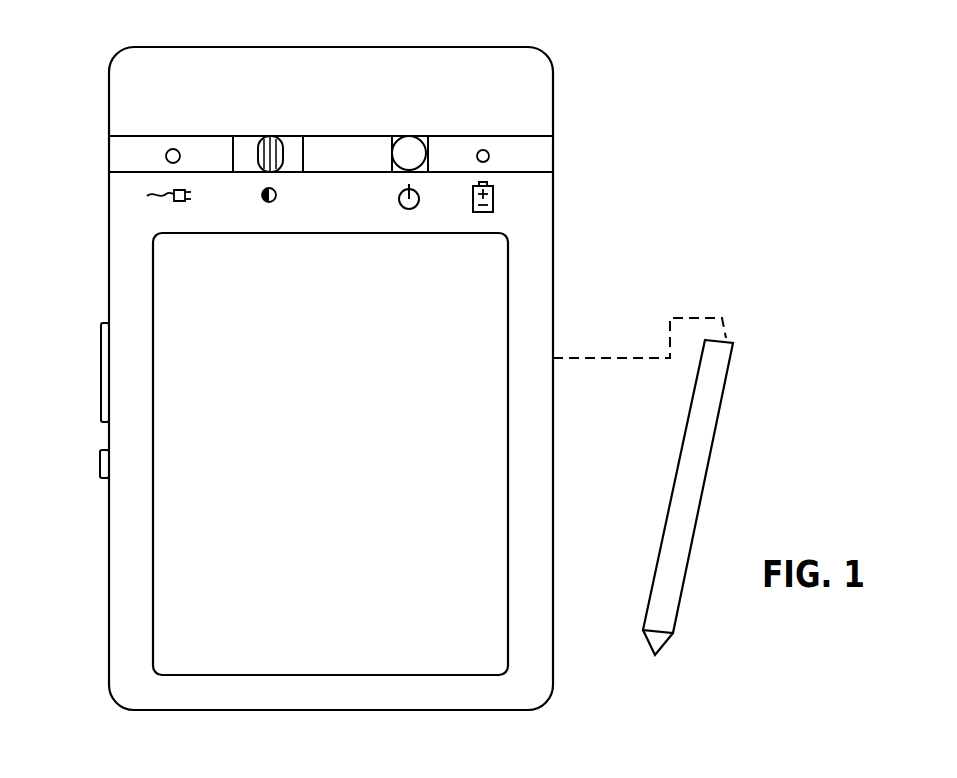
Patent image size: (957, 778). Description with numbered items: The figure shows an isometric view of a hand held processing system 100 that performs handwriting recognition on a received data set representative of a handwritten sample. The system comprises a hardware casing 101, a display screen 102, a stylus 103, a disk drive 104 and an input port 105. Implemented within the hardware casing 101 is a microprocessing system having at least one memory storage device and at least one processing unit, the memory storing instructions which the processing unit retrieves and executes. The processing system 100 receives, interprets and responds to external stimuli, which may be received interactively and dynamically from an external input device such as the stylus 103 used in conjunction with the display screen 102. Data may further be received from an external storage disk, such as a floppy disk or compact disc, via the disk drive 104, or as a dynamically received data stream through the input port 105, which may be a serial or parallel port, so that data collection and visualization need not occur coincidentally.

The hand held processing system 100 is at (371, 94).
The hardware casing 101 is at (262, 47).
The display screen 102 is at (488, 272).
The stylus 103 is at (731, 373).
The disk drive 104 is at (101, 355).
The input port 105 is at (100, 466).